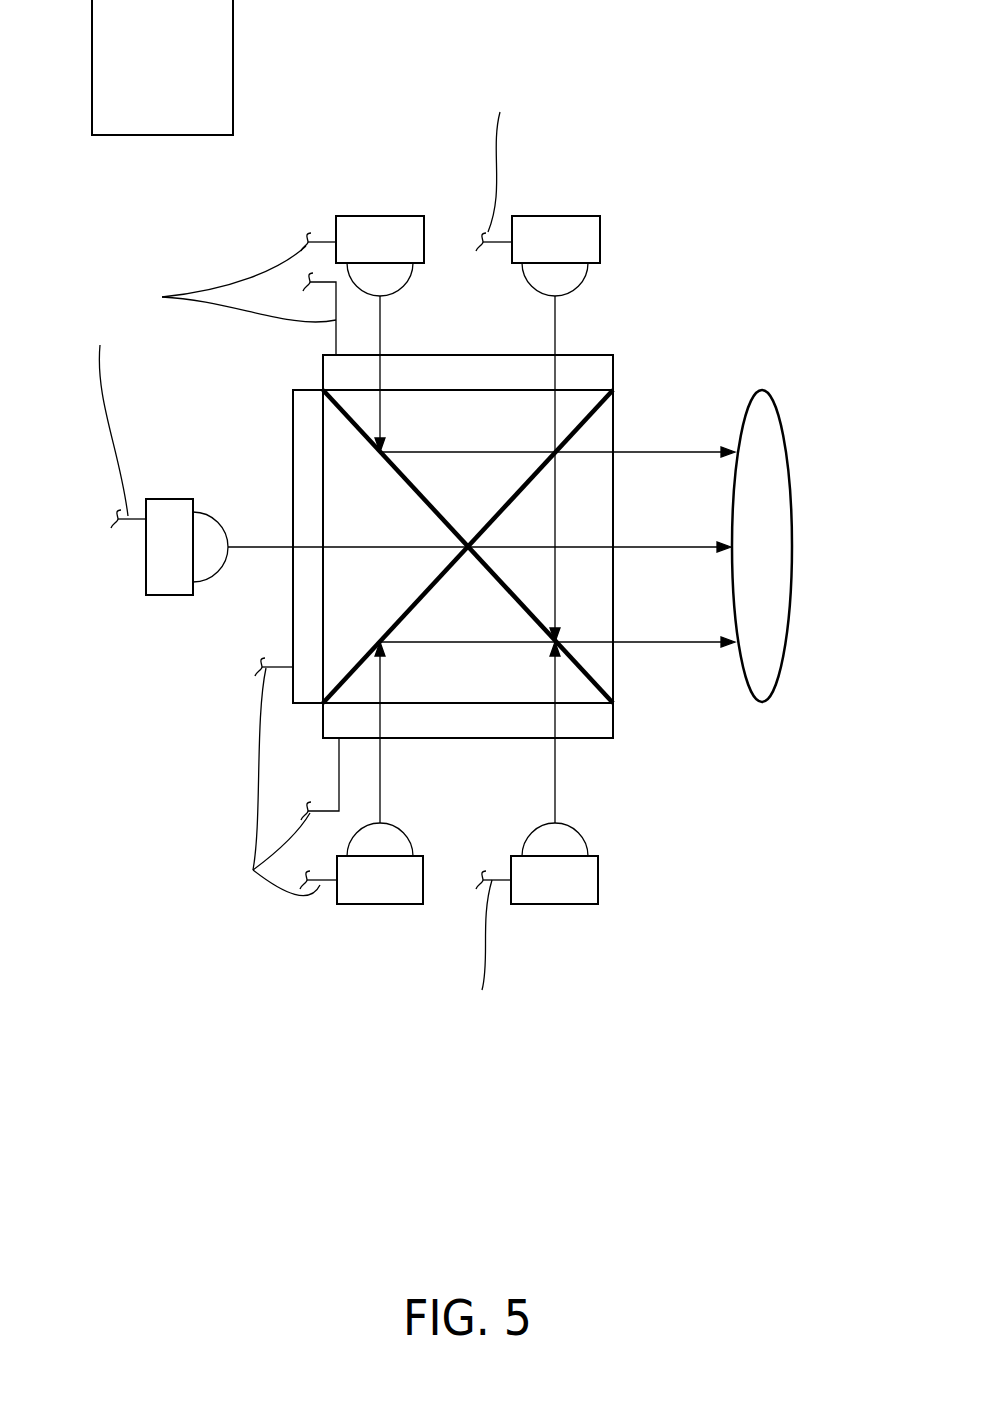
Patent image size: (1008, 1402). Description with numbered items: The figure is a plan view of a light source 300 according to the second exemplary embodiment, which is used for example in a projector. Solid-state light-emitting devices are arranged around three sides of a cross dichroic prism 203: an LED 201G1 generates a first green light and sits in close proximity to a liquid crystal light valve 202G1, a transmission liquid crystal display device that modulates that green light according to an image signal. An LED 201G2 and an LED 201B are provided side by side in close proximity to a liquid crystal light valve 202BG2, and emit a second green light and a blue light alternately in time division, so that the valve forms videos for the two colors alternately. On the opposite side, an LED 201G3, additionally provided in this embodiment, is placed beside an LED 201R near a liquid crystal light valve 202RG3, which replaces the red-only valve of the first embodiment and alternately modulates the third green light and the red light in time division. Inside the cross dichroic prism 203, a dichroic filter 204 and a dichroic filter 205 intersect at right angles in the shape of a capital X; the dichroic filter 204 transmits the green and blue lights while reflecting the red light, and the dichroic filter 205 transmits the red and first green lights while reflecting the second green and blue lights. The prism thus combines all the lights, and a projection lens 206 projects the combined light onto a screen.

The light source 300 is at (830, 256).
The LED 201G1 is at (173, 498).
The LED 201G2 is at (382, 212).
The LED 201G3 is at (384, 906).
The LED 201B is at (558, 212).
The LED 201R is at (560, 906).
The liquid crystal light valve 202G1 is at (292, 410).
The liquid crystal light valve 202BG2 is at (603, 354).
The liquid crystal light valve 202RG3 is at (590, 738).
The cross dichroic prism 203 is at (490, 398).
The dichroic filter 204 is at (600, 407).
The dichroic filter 205 is at (352, 426).
The projection lens 206 is at (762, 390).